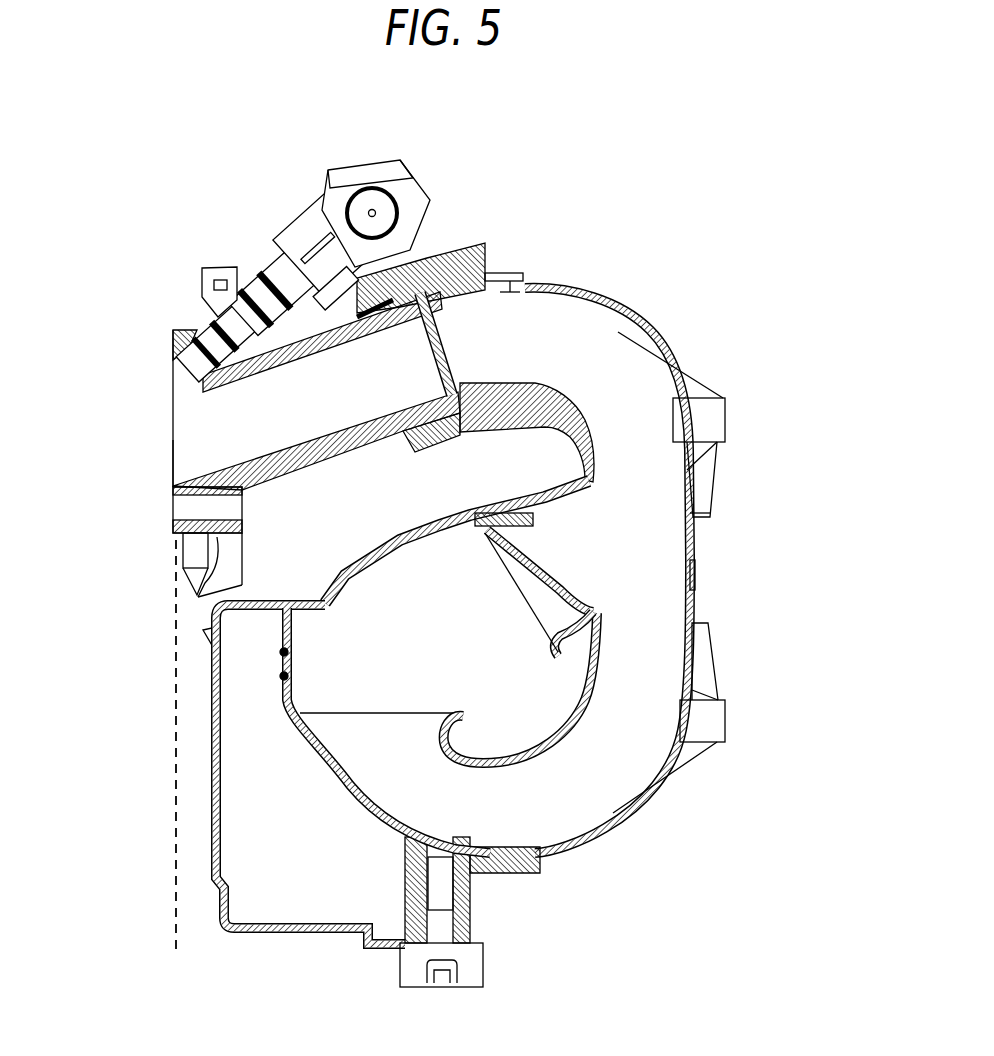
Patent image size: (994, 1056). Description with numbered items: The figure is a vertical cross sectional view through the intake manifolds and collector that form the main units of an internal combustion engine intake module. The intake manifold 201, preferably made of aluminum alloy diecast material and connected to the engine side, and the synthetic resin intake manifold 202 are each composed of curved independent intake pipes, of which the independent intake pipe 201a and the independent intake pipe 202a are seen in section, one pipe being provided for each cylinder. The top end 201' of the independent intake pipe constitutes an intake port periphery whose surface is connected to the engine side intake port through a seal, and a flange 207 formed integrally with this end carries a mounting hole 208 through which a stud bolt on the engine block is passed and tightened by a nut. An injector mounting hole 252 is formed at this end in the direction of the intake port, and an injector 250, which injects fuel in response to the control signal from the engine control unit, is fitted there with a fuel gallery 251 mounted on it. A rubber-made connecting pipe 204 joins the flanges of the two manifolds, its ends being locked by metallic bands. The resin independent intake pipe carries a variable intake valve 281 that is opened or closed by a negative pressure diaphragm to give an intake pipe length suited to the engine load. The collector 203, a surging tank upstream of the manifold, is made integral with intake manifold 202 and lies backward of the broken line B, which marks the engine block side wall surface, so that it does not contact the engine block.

The intake manifold 201 is at (383, 466).
The independent intake pipe 201a is at (279, 425).
The one end of independent intake pipe 201' is at (163, 510).
The intake manifold 202 is at (705, 600).
The independent intake pipe 202a is at (597, 345).
The collector 203 is at (528, 693).
The rubber-made connecting pipe 204 is at (470, 242).
The flange 207 is at (203, 592).
The mounting hole 208 is at (176, 522).
The injector 250 is at (210, 323).
The fuel gallery 251 is at (405, 183).
The injector mounting hole 252 is at (175, 383).
The variable intake valve 281 is at (560, 585).
The broken line B is at (165, 745).